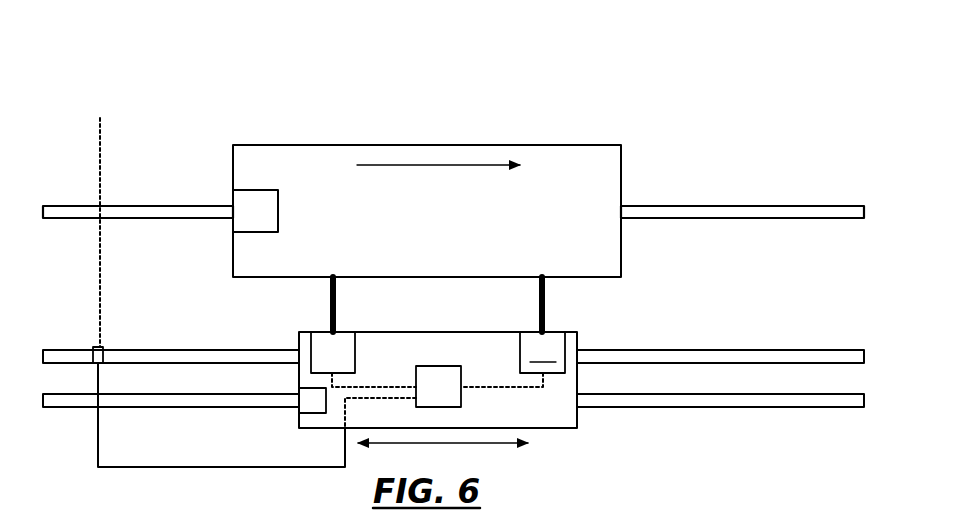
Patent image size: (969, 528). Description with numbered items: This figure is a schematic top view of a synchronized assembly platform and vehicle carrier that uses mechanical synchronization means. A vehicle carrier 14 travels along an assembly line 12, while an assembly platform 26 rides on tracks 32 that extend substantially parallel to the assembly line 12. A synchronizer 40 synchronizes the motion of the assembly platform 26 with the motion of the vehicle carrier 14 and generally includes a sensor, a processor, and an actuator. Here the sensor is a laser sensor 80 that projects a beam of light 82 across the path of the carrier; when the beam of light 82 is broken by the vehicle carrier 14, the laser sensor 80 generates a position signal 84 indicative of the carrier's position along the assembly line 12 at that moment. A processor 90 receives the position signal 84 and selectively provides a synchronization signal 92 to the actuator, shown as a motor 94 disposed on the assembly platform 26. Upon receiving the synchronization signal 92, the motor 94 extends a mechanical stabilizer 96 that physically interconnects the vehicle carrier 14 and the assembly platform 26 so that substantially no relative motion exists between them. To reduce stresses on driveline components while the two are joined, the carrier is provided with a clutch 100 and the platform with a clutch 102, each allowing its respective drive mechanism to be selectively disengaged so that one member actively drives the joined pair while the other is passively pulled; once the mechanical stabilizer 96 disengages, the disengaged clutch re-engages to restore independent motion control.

The assembly line 12 is at (695, 204).
The vehicle carrier 14 is at (232, 152).
The clutch 100 is at (263, 232).
The beam of light 82 is at (112, 243).
The laser sensor 80 is at (106, 354).
The tracks 32 is at (823, 350).
The assembly platform 26 is at (298, 338).
The mechanical stabilizer 96 is at (337, 309).
The motor 94 is at (346, 362).
The processor 90 is at (452, 396).
The synchronization signal 92 is at (490, 387).
The clutch 102 is at (308, 413).
The position signal 84 is at (127, 468).
The synchronizer 40 is at (606, 309).